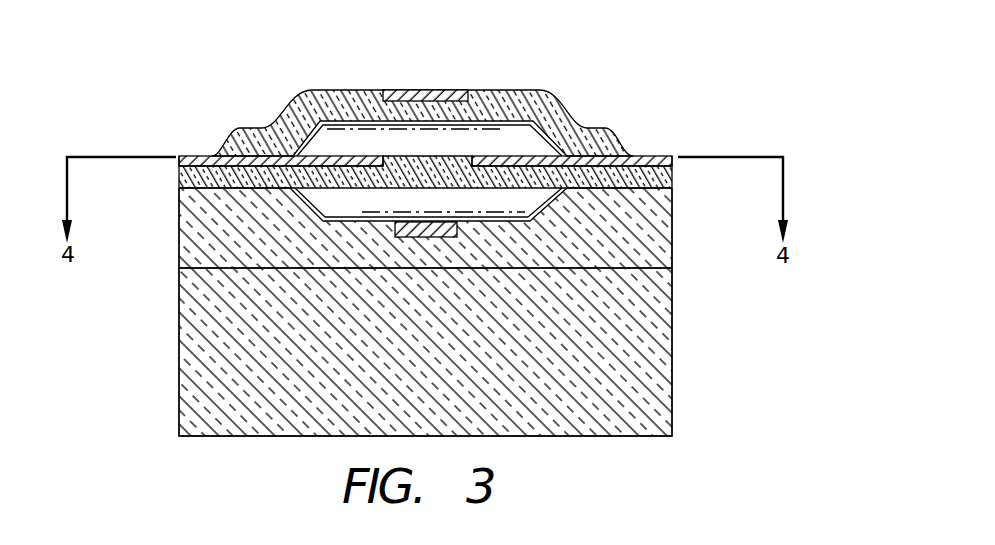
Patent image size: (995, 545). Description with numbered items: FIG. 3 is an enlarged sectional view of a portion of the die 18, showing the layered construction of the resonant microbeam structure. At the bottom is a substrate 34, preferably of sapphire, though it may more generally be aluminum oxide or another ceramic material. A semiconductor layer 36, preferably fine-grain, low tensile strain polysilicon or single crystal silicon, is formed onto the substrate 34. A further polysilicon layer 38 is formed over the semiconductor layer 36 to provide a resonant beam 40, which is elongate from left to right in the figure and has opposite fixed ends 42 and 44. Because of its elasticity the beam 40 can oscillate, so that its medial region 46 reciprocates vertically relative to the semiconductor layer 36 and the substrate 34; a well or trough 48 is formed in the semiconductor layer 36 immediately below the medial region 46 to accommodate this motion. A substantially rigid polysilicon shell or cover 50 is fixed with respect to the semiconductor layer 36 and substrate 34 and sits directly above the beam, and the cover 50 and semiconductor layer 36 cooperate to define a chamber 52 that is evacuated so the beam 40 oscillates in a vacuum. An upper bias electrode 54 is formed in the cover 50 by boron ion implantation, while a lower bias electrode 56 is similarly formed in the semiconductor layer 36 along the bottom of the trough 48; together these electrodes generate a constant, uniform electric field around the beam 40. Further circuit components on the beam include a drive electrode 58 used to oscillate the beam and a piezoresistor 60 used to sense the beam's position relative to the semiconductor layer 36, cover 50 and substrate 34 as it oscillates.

The die 18 is at (219, 84).
The substrate 34 is at (188, 416).
The semiconductor layer 36 is at (178, 247).
The polysilicon layer 38 is at (368, 178).
The resonant beam 40 is at (519, 148).
The fixed end 42 is at (181, 178).
The fixed end 44 is at (673, 178).
The medial region 46 is at (446, 180).
The trough 48 is at (443, 200).
The cover 50 is at (334, 92).
The chamber 52 is at (505, 145).
The upper bias electrode 54 is at (424, 91).
The lower bias electrode 56 is at (420, 238).
The drive electrode 58 is at (658, 157).
The piezoresistor 60 is at (193, 154).